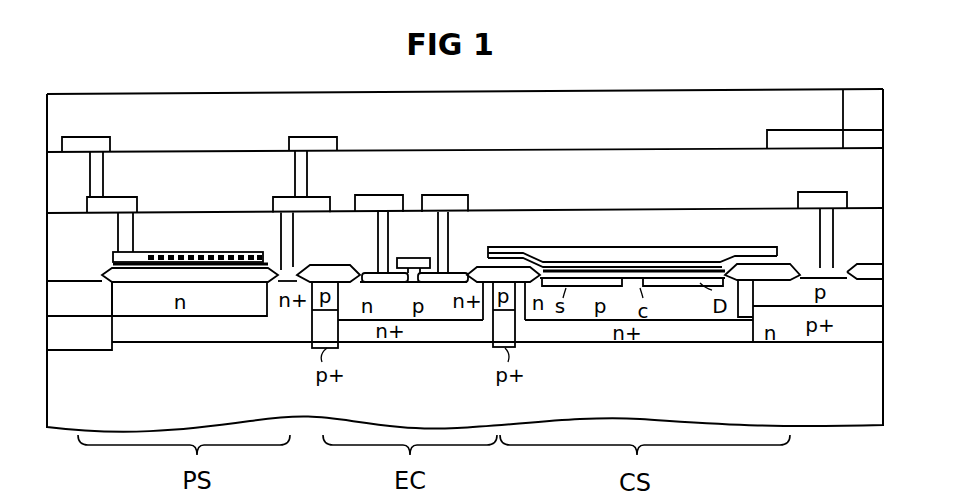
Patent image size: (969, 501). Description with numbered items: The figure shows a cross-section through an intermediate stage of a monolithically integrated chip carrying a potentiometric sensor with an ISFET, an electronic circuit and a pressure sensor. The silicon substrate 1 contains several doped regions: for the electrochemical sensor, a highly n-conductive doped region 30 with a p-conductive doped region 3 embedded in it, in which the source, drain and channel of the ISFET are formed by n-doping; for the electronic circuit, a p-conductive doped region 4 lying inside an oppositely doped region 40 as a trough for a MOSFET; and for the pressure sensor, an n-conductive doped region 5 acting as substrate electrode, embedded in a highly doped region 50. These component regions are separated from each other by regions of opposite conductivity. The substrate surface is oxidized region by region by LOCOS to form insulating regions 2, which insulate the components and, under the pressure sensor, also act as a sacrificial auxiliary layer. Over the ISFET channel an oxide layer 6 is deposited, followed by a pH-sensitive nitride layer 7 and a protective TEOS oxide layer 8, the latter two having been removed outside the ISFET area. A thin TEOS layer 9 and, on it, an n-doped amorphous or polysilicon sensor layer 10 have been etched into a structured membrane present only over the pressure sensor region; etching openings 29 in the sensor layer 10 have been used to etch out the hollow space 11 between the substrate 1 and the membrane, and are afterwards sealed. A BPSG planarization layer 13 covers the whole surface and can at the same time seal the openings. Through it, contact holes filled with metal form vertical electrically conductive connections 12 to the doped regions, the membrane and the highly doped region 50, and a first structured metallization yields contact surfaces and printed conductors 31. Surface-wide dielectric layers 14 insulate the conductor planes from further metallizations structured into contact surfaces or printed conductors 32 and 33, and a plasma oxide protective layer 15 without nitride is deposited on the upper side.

The substrate 1 is at (833, 393).
The insulating regions 2 is at (108, 272).
The p-conductive doped region 3 is at (672, 305).
The doped region 4 is at (433, 307).
The n-conductive doped region 5 is at (153, 307).
The oxide layer 6 is at (577, 263).
The pH-sensitive layer 7 is at (630, 262).
The oxide layer 8 is at (690, 258).
The TEOS layer 9 is at (197, 272).
The sensor layer 10 is at (261, 252).
The hollow space 11 is at (140, 273).
The vertical electrically conductive connections 12 is at (295, 171).
The planarization layer 13 is at (866, 240).
The dielectric layers 14 is at (845, 90).
The protective layer 15 is at (815, 102).
The etching openings 29 is at (197, 252).
The highly n-conductive doped region 30 is at (563, 330).
The contact surfaces and printed conductors 31 is at (437, 196).
The contact surfaces or printed conductors 32 is at (90, 137).
The contact surfaces or printed conductors 33 is at (795, 140).
The oppositely doped region 40 is at (463, 318).
The highly doped region 50 is at (240, 332).